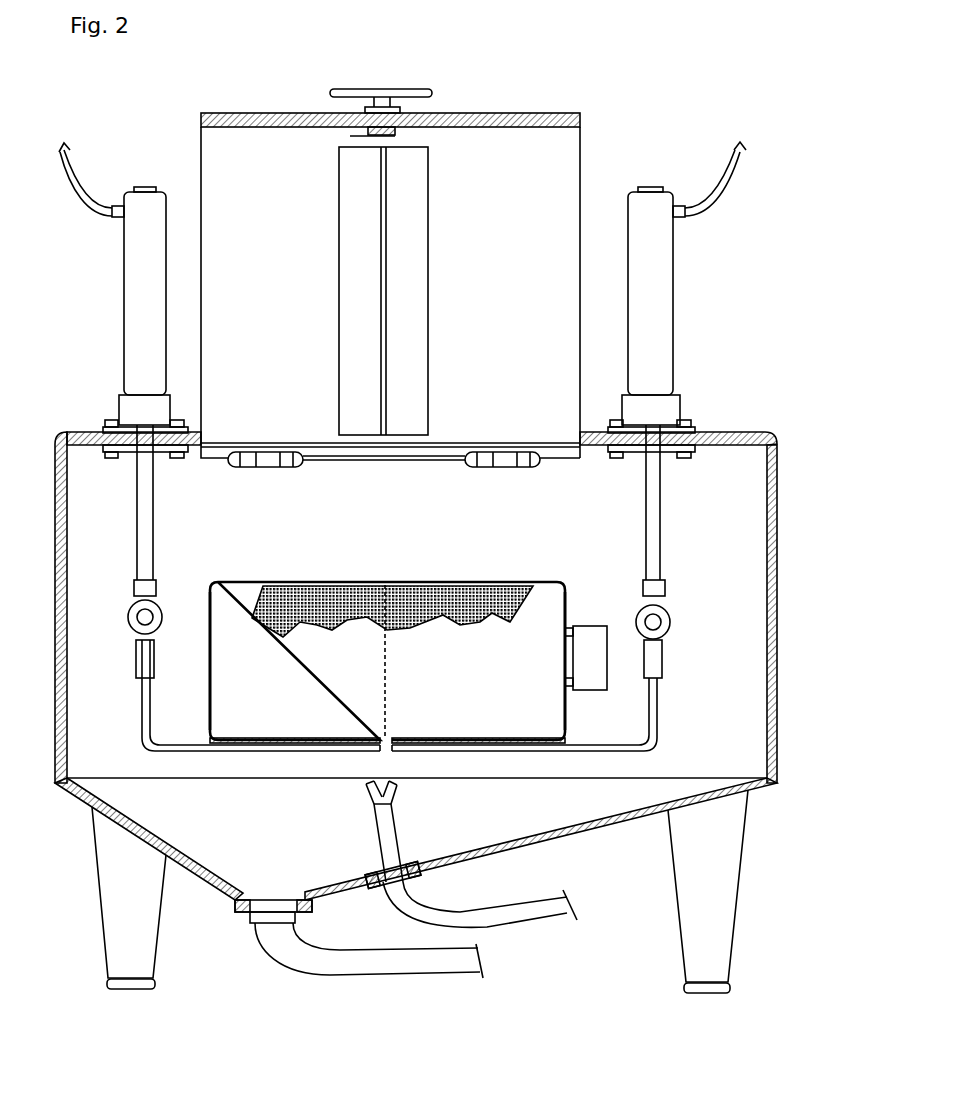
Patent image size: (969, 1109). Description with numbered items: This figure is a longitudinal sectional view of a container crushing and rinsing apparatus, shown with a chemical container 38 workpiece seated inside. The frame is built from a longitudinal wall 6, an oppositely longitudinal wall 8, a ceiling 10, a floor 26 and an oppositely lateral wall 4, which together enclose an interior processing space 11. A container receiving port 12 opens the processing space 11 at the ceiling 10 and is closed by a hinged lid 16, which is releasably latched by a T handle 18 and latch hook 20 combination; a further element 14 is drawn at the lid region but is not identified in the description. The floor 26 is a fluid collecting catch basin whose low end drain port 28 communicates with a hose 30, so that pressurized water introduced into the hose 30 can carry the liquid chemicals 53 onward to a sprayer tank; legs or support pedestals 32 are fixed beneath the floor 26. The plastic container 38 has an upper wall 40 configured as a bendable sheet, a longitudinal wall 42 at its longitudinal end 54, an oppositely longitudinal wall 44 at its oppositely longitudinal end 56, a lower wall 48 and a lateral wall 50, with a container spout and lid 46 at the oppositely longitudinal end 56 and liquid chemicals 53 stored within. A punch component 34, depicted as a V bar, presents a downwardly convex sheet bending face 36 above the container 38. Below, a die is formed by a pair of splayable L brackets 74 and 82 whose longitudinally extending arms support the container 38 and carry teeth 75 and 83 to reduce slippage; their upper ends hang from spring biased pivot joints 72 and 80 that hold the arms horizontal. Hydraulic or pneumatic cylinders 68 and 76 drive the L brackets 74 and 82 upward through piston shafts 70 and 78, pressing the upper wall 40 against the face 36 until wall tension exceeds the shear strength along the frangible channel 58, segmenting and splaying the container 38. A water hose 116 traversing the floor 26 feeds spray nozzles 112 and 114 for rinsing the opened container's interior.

The oppositely lateral wall 4 is at (713, 532).
The longitudinal wall 6 is at (55, 742).
The oppositely longitudinal wall 8 is at (777, 680).
The ceiling 10 is at (722, 433).
The processing space 11 is at (504, 518).
The container receiving port 12 is at (597, 446).
The roller 14 is at (290, 461).
The lid 16 is at (565, 153).
The T handle 18 is at (378, 89).
The latch hook 20 is at (356, 136).
The floor 26 is at (603, 830).
The drain port 28 is at (257, 901).
The hose 30 is at (395, 975).
The legs or support pedestals 32 is at (117, 895).
The punch component 34 is at (400, 287).
The sheet bending face 36 is at (382, 223).
The chemical container 38 is at (548, 562).
The upper wall 40 is at (346, 583).
The longitudinal wall 42 is at (208, 604).
The oppositely longitudinal wall 44 is at (573, 612).
The container spout and lid 46 is at (592, 678).
The lower wall 48 is at (432, 742).
The lateral wall 50 is at (337, 673).
The liquid chemicals 53 is at (447, 603).
The longitudinal end 54 is at (261, 698).
The oppositely longitudinal end 56 is at (512, 703).
The frangible channel 58 is at (387, 677).
The hydraulic or pneumatic cylinder 68 is at (135, 312).
The piston shaft 70 is at (145, 558).
The pivot joint 72 is at (128, 619).
The L bracket 74 is at (185, 750).
The teeth 75 is at (293, 745).
The hydraulic or pneumatic cylinder 76 is at (678, 287).
The piston shaft 78 is at (658, 500).
The pivot joint 80 is at (670, 620).
The L bracket 82 is at (608, 748).
The teeth 83 is at (520, 742).
The spray nozzle 112 is at (370, 800).
The spray nozzle 114 is at (400, 800).
The water hose 116 is at (522, 920).